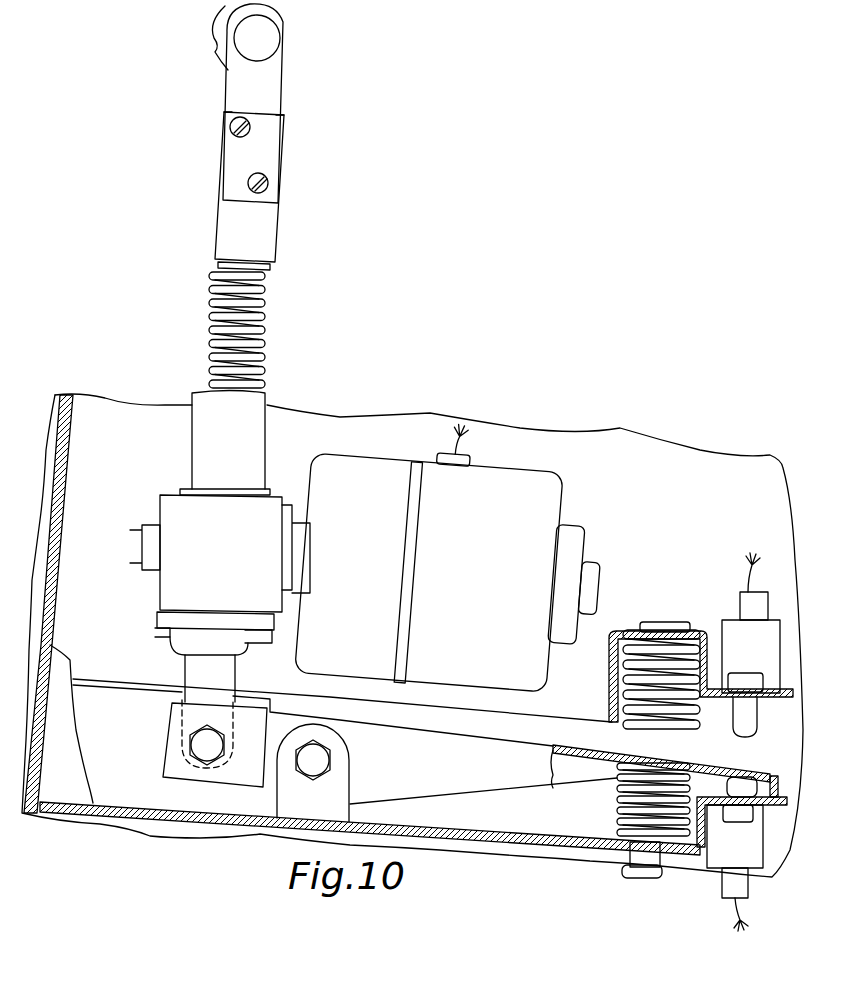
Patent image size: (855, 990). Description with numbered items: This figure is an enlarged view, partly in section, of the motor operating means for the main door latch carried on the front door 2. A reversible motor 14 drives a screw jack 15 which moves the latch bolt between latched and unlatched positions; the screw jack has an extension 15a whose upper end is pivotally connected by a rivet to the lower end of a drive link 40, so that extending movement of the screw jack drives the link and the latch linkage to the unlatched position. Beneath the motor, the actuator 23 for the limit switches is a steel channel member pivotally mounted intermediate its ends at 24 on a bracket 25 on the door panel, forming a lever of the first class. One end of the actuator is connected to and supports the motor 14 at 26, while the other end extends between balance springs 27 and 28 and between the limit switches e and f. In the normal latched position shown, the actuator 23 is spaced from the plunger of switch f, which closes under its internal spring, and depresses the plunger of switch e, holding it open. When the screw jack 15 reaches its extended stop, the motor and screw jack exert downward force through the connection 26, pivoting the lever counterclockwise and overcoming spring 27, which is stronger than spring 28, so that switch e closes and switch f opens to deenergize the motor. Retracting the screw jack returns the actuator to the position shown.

The front door 2 is at (131, 412).
The reversible motor 14 is at (552, 515).
The screw jack 15 is at (268, 305).
The extension of the screw jack device 15a is at (270, 73).
The drive link 40 is at (222, 36).
The actuator 23 is at (462, 800).
The pivot 24 is at (300, 760).
The bracket 25 is at (345, 787).
The connection 26 is at (195, 745).
The balance spring 27 is at (700, 712).
The balance spring 28 is at (615, 808).
The motor limit switch f is at (728, 640).
The motor limit switch e is at (745, 858).